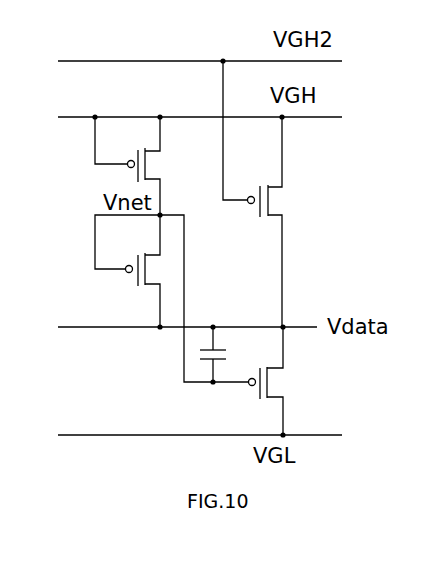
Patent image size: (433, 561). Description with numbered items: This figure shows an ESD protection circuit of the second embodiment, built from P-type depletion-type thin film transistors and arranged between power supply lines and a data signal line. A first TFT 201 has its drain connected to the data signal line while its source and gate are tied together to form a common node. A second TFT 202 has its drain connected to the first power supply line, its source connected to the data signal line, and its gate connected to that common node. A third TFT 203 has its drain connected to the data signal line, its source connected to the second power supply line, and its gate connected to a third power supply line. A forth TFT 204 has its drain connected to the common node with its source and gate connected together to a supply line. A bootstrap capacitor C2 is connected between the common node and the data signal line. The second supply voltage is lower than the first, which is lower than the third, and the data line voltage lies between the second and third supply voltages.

The first TFT 201 is at (131, 293).
The second TFT 202 is at (285, 387).
The third TFT 203 is at (284, 206).
The forth TFT 204 is at (191, 160).
The bootstrap capacitor C2 is at (225, 346).